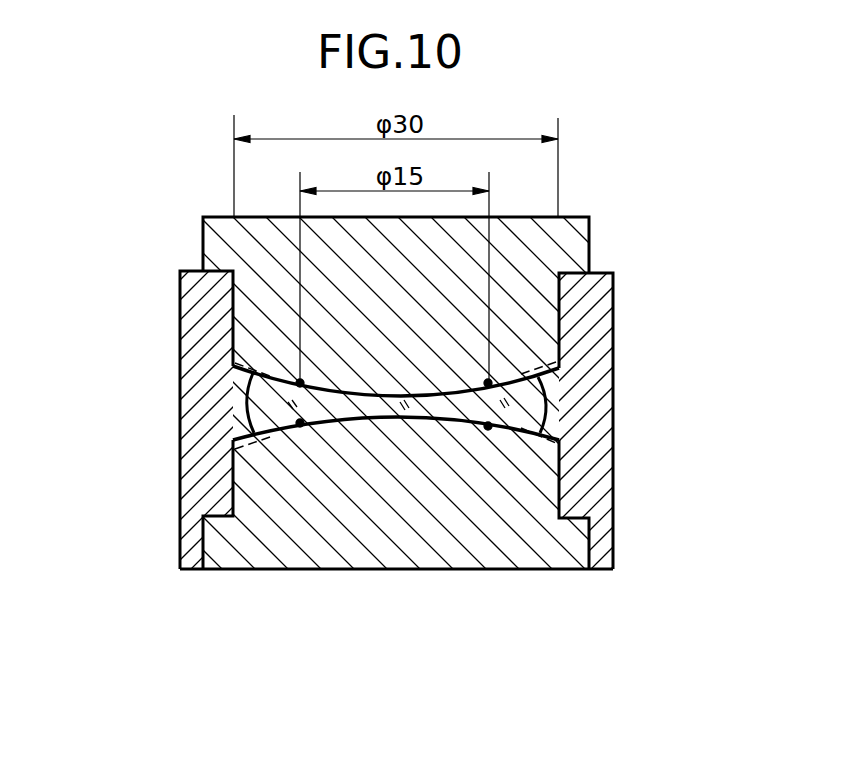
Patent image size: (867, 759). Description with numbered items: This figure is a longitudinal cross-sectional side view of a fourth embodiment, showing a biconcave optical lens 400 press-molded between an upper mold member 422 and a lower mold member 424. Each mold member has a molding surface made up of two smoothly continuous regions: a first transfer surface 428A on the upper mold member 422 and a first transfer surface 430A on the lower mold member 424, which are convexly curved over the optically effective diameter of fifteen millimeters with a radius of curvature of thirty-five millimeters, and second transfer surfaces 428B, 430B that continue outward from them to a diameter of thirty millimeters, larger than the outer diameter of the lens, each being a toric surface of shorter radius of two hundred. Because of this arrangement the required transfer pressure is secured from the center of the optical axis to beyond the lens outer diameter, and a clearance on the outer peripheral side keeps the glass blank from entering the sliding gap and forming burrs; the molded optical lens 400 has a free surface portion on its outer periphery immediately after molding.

The optical lens 400 is at (256, 406).
The upper mold member 422 is at (579, 217).
The lower mold member 424 is at (417, 560).
The first transfer surface 428A is at (355, 394).
The second transfer surface 428B is at (527, 386).
The first transfer surface 430A is at (424, 416).
The second transfer surface 430B is at (528, 424).